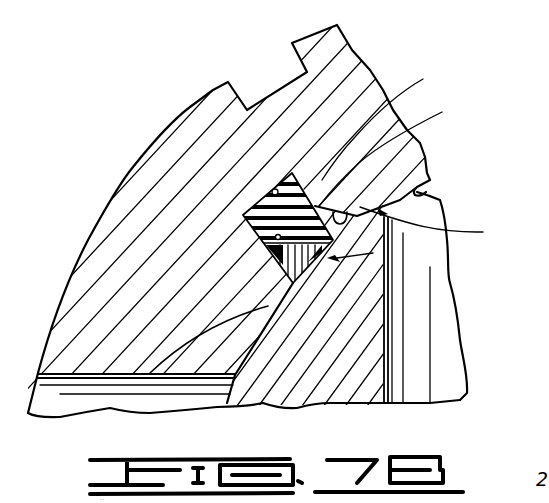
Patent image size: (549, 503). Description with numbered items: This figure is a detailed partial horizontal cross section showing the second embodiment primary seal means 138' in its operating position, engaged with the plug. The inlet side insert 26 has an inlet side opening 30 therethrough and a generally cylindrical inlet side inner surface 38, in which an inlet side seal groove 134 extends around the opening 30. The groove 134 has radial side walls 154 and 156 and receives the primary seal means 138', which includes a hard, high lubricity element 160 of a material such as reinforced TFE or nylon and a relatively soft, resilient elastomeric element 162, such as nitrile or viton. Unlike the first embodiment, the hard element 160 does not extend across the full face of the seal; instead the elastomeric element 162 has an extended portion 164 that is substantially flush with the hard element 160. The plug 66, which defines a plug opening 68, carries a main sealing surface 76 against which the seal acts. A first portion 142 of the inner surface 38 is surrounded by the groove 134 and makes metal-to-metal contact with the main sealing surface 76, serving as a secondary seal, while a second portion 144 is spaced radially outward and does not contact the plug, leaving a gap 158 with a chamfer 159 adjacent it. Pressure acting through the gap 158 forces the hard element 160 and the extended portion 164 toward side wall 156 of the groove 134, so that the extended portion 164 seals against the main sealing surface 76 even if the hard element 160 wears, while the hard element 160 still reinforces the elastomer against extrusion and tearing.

The inlet side insert 26 is at (198, 138).
The inlet side seal groove 134 is at (288, 185).
The resilient elastomeric element 162 is at (258, 212).
The side wall of groove 156 is at (275, 237).
The side wall of groove 154 is at (423, 79).
The chamfer 159 is at (442, 112).
The second portion of inner surface 144 is at (423, 190).
The gap 158 is at (397, 204).
The inlet side inner surface 38 is at (485, 232).
The plug 66 is at (355, 377).
The first portion of inner surface 142 is at (255, 333).
The hard element 160 is at (393, 333).
The extended portion 164 is at (373, 253).
The primary seal means 138' is at (451, 318).
The plug opening 68 is at (385, 309).
The main sealing surface 76 is at (150, 373).
The inlet side opening 30 is at (178, 373).